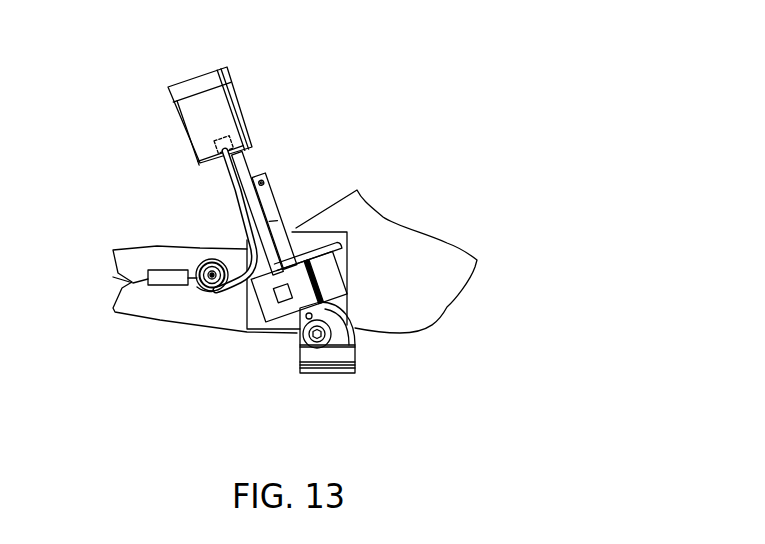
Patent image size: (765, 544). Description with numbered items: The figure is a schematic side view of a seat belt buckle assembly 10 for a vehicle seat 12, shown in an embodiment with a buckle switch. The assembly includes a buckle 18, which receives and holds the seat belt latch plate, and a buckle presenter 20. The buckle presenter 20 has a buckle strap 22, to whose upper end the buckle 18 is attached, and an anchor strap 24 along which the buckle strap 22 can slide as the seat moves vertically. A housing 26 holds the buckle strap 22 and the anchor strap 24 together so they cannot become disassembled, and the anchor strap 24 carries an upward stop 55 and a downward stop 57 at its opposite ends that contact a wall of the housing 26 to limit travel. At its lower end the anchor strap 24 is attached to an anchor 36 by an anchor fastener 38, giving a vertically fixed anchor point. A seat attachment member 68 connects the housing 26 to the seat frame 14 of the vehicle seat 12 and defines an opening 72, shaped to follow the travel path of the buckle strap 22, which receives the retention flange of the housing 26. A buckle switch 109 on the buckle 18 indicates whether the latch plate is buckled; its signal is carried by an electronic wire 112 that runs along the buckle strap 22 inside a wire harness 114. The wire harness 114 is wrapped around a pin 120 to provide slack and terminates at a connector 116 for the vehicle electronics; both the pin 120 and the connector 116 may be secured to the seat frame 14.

The seat belt buckle assembly 10 is at (264, 66).
The vehicle seat 12 is at (448, 213).
The seat frame 14 is at (138, 247).
The buckle 18 is at (200, 82).
The buckle presenter 20 is at (286, 120).
The buckle strap 22 is at (213, 165).
The anchor strap 24 is at (277, 206).
The housing 26 is at (252, 332).
The anchor 36 is at (353, 343).
The anchor fastener 38 is at (347, 352).
The upward stop 55 is at (262, 176).
The downward stop 57 is at (292, 330).
The seat attachment member 68 is at (247, 300).
The opening 72 is at (310, 246).
The buckle switch 109 is at (197, 157).
The electronic wire 112 is at (236, 190).
The wire harness 114 is at (197, 287).
The connector 116 is at (113, 277).
The pin 120 is at (216, 258).